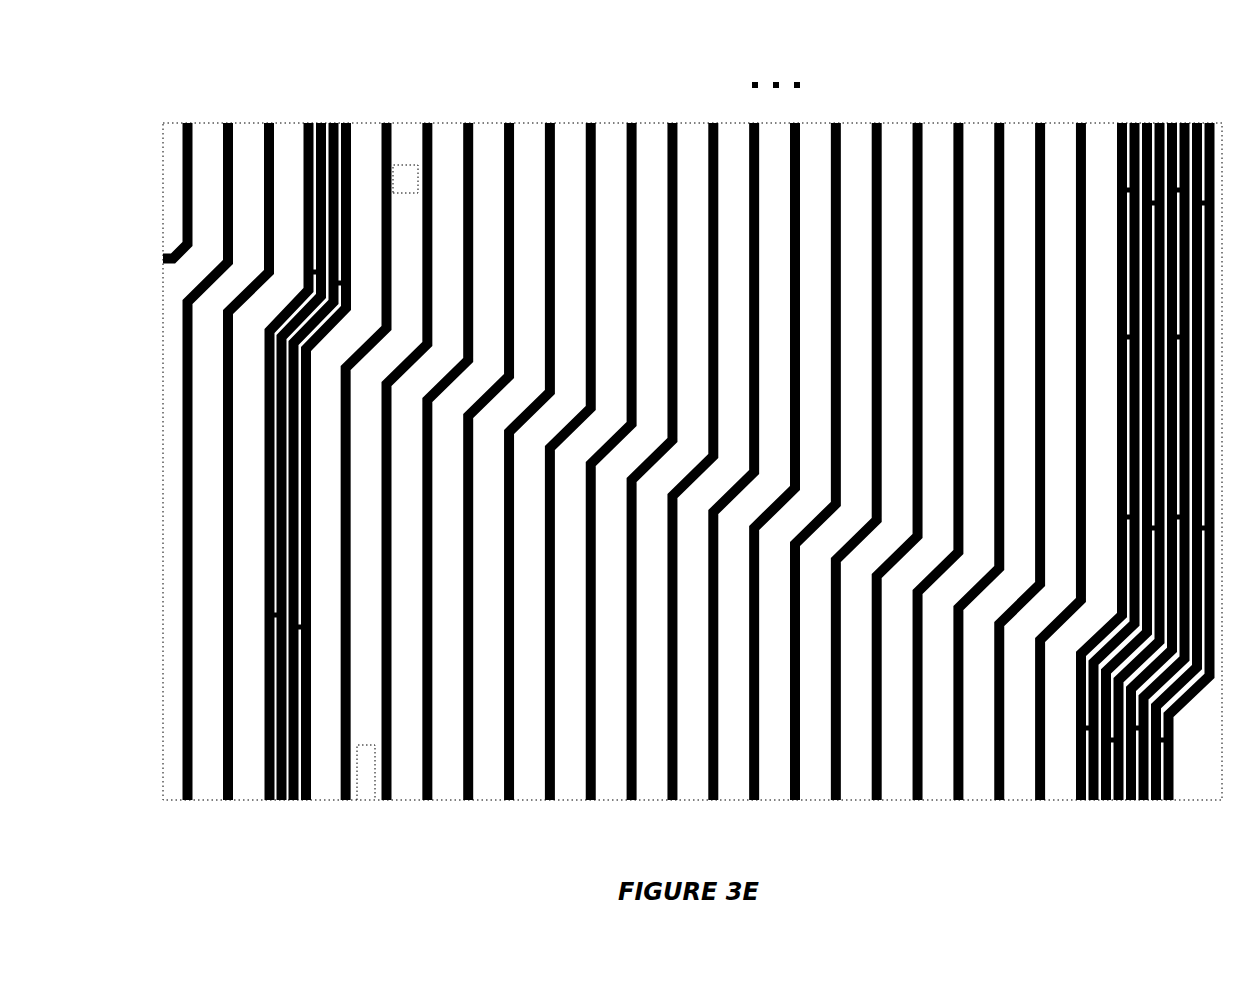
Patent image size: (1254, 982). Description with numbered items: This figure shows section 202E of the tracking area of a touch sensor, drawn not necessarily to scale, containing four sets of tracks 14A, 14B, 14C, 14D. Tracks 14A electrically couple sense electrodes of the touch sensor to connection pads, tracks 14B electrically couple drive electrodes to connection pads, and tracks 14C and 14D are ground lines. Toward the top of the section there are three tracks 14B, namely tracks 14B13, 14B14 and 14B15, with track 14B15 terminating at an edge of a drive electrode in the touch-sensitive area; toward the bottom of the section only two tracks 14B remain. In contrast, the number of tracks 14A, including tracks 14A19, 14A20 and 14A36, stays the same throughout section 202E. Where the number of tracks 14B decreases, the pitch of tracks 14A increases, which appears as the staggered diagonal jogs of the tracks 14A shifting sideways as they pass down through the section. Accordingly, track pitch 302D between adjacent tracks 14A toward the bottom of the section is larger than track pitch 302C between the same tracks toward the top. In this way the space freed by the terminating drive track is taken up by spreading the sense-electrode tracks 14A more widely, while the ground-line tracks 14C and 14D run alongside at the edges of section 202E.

The section of tracking area 202E is at (160, 121).
The track 14A19 is at (382, 120).
The track 14A20 is at (426, 120).
The track 14A36 is at (1082, 120).
The track 14B15 is at (181, 232).
The track 14B14 is at (181, 404).
The track 14B13 is at (221, 627).
The track pitch 302C is at (405, 186).
The track pitch 302D is at (393, 814).
The tracks 14A is at (727, 472).
The tracks 14B is at (180, 480).
The tracks 14C is at (312, 806).
The tracks 14D is at (1068, 806).